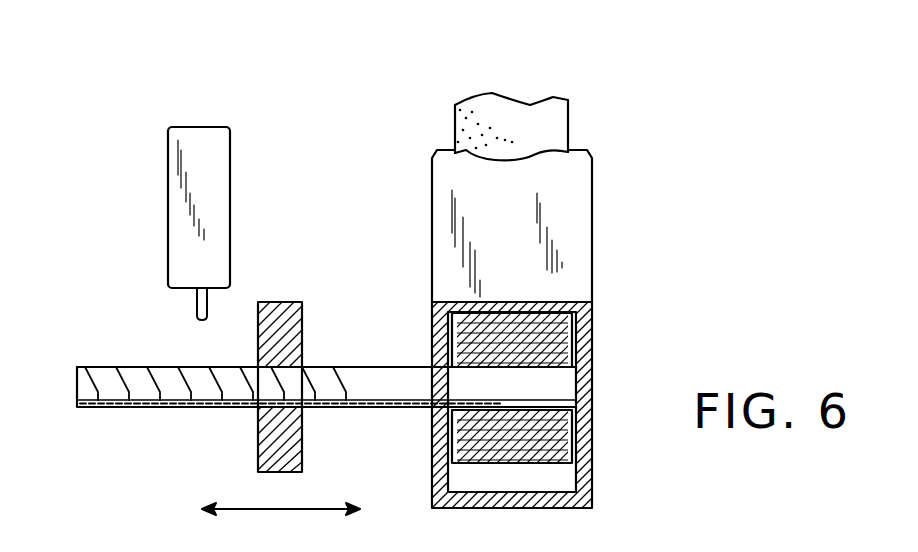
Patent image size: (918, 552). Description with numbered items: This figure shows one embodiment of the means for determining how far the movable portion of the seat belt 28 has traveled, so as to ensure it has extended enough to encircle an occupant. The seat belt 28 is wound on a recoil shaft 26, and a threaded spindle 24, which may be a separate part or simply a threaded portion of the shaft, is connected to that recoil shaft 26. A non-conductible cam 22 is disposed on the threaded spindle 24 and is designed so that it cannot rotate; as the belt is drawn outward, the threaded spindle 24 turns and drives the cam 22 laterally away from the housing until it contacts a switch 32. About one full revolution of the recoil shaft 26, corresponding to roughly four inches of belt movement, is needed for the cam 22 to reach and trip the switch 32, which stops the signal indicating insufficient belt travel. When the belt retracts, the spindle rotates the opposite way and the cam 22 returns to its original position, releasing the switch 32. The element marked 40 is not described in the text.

The non-conductible cam 22 is at (258, 452).
The threaded spindle 24 is at (113, 370).
The recoil shaft 26 is at (553, 380).
The seat belt 28 is at (553, 118).
The switch 32 is at (194, 305).
The actuator body 40 is at (167, 102).